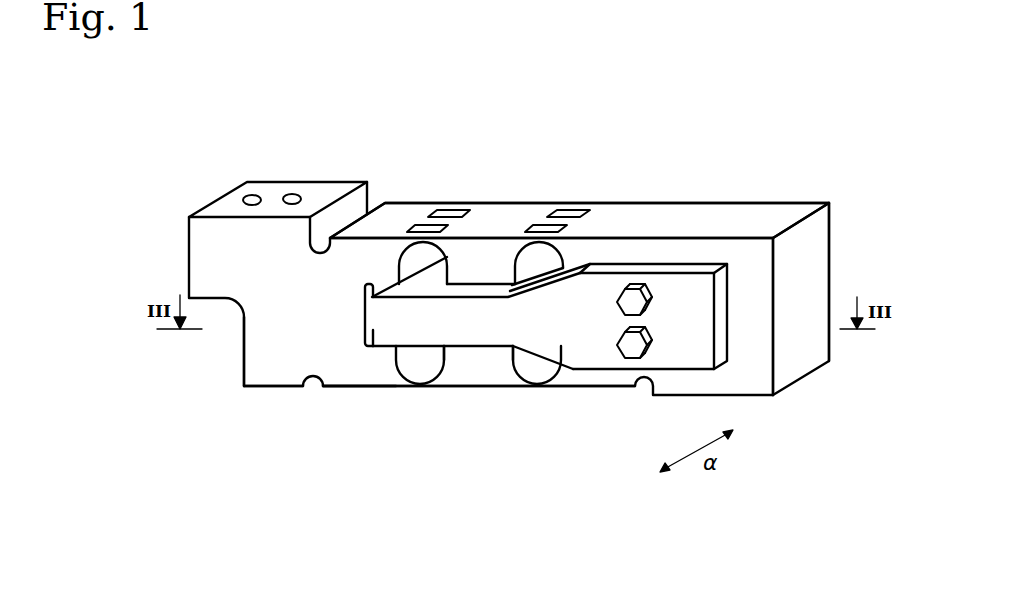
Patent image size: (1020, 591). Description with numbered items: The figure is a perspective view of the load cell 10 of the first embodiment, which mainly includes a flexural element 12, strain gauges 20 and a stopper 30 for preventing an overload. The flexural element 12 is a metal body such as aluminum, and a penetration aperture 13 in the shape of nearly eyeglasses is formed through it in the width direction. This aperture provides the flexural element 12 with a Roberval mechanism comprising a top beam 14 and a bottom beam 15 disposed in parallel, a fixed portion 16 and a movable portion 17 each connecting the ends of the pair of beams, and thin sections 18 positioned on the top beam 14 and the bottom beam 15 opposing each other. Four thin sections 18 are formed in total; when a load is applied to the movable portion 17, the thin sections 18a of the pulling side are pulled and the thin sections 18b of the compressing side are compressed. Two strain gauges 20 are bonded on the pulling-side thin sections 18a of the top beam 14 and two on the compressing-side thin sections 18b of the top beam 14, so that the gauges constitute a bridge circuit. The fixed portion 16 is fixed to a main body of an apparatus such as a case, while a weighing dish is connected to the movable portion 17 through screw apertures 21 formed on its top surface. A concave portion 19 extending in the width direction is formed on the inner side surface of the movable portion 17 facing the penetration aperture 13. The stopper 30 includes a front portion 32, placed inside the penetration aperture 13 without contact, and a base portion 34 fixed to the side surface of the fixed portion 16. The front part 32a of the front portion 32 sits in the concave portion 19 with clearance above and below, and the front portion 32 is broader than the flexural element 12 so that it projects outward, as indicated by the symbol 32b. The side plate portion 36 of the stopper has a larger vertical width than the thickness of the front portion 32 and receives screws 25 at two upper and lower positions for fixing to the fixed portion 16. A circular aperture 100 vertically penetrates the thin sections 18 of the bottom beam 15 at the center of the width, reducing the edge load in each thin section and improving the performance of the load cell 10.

The load cell 10 is at (609, 184).
The flexural element 12 is at (508, 198).
The penetration aperture 13 is at (412, 363).
The top beam 14 is at (488, 263).
The bottom beam 15 is at (453, 377).
The fixed portion 16 is at (743, 297).
The movable portion 17 is at (300, 292).
The thin sections 18 is at (474, 295).
The thin sections of the pulling side 18a is at (538, 241).
The thin sections of the compressing side 18b is at (418, 241).
The concave portion 19 is at (363, 313).
The strain gauges 20 is at (432, 226).
The screw apertures 21 is at (290, 196).
The screws 25 is at (641, 290).
The stopper 30 is at (510, 332).
The front portion 32 is at (441, 314).
The front part 32a is at (373, 288).
The projecting part of front portion 32b is at (393, 329).
The base portion 34 is at (623, 371).
The side plate portion 36 is at (590, 338).
The circular aperture 100 is at (405, 390).